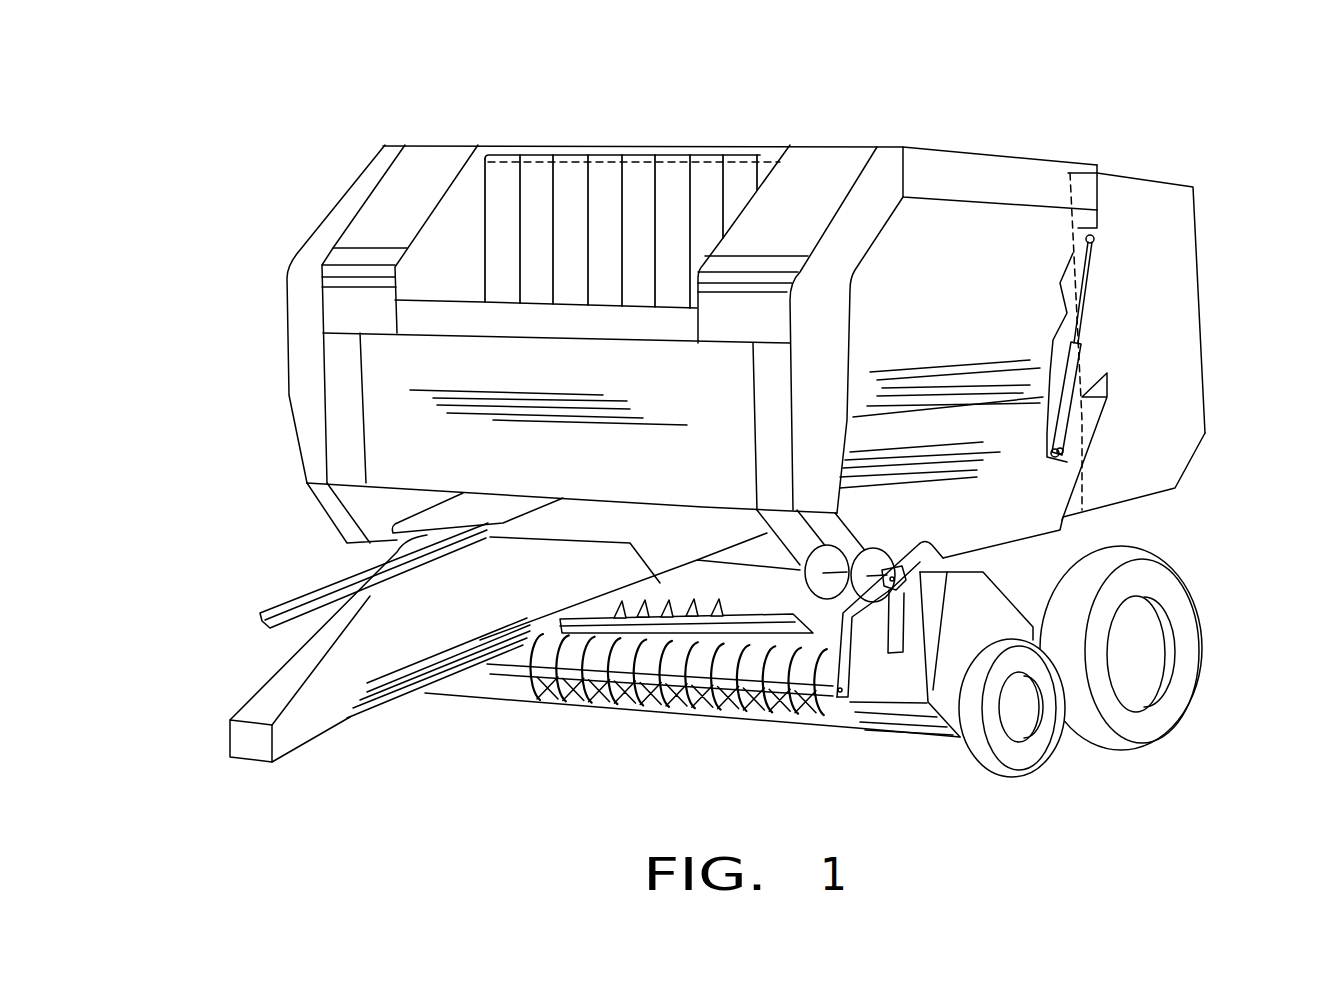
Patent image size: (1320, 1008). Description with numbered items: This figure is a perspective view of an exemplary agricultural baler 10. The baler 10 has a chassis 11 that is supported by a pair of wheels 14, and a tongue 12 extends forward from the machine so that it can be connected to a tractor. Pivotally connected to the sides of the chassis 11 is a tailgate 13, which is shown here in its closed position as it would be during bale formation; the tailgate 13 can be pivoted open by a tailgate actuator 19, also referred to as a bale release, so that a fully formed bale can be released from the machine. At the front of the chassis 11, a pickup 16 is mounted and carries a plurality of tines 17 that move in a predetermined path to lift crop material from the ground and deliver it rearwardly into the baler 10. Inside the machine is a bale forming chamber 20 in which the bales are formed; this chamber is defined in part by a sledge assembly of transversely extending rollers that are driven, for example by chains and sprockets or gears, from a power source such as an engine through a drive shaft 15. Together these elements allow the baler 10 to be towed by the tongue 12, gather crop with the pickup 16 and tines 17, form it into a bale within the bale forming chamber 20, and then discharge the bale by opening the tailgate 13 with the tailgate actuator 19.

The agricultural baler 10 is at (770, 80).
The chassis 11 is at (1033, 550).
The tongue 12 is at (253, 688).
The tailgate 13 is at (1185, 240).
The wheels 14 is at (1199, 620).
The drive shaft 15 is at (320, 577).
The pickup 16 is at (790, 765).
The tines 17 is at (673, 713).
The tailgate actuator 19 is at (1078, 363).
The bale forming chamber 20 is at (462, 254).